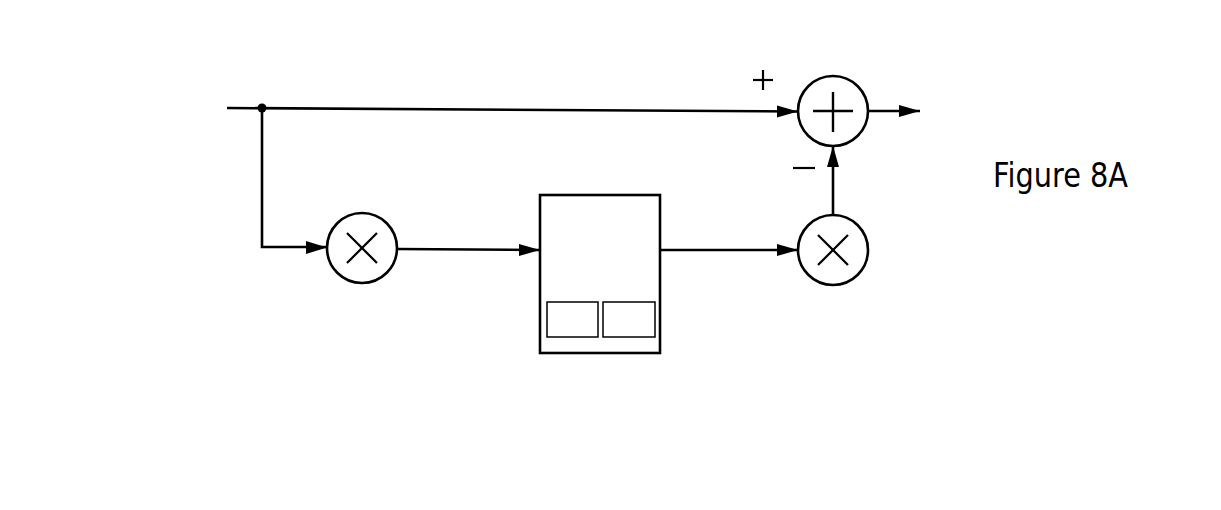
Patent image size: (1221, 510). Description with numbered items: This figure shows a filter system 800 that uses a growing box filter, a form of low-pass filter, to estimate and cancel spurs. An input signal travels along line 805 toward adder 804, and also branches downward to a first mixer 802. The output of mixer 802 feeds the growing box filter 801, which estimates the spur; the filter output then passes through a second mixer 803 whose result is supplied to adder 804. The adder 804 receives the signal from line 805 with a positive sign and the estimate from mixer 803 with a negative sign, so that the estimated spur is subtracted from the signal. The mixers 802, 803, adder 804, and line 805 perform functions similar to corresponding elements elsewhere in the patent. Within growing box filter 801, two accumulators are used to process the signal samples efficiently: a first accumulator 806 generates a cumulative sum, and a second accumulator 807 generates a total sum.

The system 800 is at (452, 65).
The growing box filter 801 is at (669, 274).
The mixer 802 is at (363, 283).
The mixer 803 is at (832, 285).
The adder 804 is at (828, 78).
The line 805 is at (312, 108).
The first accumulator 806 is at (572, 319).
The second accumulator 807 is at (629, 319).